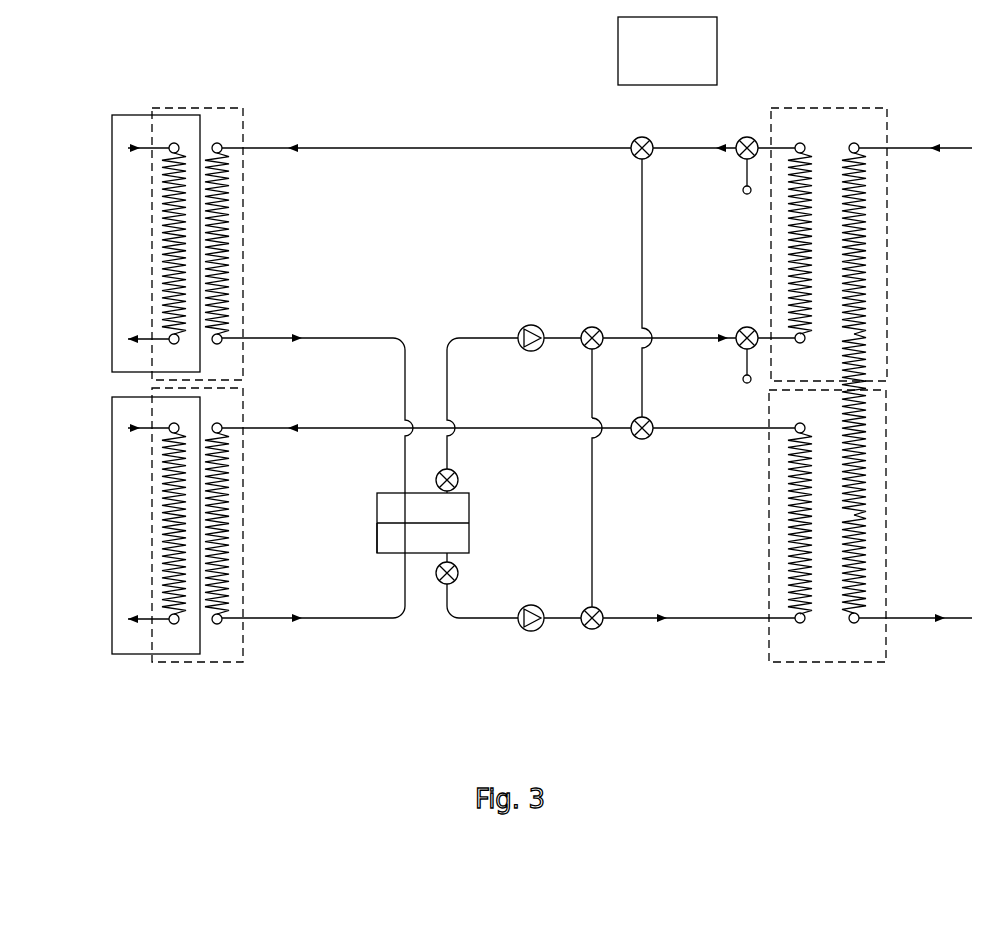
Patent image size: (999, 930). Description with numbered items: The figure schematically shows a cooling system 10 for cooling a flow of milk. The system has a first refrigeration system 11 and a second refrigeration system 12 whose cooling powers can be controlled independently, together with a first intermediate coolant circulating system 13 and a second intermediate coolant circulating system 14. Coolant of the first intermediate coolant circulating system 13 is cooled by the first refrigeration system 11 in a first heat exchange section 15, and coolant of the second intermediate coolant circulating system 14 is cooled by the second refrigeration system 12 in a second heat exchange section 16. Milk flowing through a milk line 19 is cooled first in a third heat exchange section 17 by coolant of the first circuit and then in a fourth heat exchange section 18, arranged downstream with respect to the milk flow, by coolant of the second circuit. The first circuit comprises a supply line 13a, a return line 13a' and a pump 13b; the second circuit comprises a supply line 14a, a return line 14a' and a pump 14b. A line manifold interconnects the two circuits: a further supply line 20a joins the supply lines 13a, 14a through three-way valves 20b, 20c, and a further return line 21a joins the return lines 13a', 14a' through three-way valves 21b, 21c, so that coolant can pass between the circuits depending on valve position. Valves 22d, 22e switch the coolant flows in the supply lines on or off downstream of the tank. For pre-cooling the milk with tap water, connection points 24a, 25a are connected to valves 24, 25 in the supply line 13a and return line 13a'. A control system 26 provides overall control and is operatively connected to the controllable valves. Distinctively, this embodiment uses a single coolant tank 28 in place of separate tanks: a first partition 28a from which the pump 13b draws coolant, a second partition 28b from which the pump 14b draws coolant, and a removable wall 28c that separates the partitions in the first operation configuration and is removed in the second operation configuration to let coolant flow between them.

The cooling system 10 is at (358, 101).
The first refrigeration system 11 is at (120, 115).
The second refrigeration system 12 is at (128, 654).
The first intermediate coolant circulating system 13 is at (508, 267).
The supply line 13a is at (640, 310).
The return line 13a' is at (426, 174).
The pump 13b is at (531, 325).
The second intermediate coolant circulating system 14 is at (508, 530).
The supply line 14a is at (686, 643).
The return line 14a' is at (508, 453).
The pump 14b is at (533, 605).
The first heat exchange section 15 is at (203, 108).
The second heat exchange section 16 is at (200, 662).
The third heat exchange section 17 is at (838, 108).
The fourth heat exchange section 18 is at (835, 662).
The milk line 19 is at (912, 148).
The further supply line 20a is at (593, 548).
The three-way valve 20b is at (598, 605).
The three-way valve 20c is at (590, 358).
The further return line 21a is at (642, 210).
The three-way valve 21b is at (650, 418).
The three-way valve 21c is at (635, 158).
The valve 22d is at (458, 565).
The valve 22e is at (455, 472).
The valve 24 is at (740, 327).
The connection point 24a is at (744, 384).
The valve 25 is at (742, 158).
The connection point 25a is at (744, 193).
The control system 26 is at (717, 48).
The coolant tank 28 is at (421, 528).
The first partition 28a is at (467, 500).
The second partition 28b is at (382, 540).
The removable wall 28c is at (393, 519).